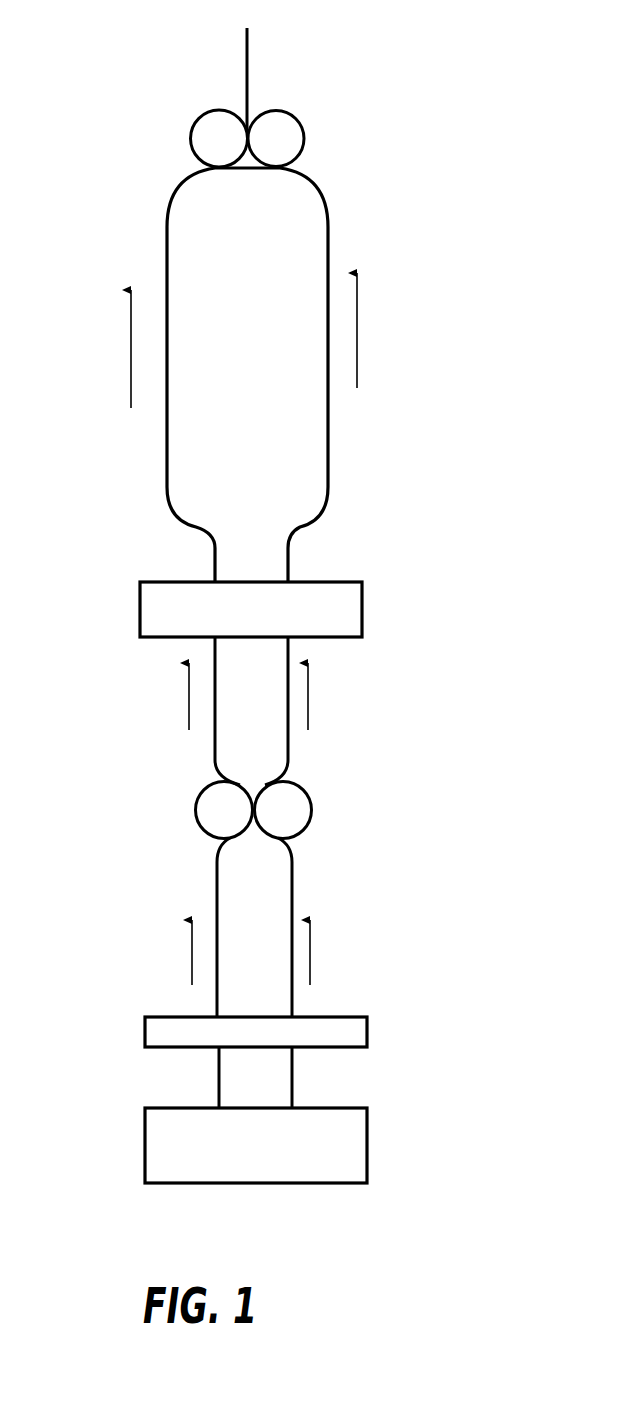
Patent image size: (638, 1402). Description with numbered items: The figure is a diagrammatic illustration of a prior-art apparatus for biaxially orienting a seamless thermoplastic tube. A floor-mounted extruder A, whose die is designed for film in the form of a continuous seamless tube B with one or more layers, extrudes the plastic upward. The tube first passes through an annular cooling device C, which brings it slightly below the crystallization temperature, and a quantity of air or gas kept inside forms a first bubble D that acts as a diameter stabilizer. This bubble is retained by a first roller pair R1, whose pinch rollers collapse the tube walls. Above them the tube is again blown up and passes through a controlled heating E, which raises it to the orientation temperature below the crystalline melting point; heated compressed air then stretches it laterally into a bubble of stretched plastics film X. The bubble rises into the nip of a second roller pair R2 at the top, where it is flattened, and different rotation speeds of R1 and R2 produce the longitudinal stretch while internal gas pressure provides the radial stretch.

The second roller pair R2 is at (293, 136).
The bubble of stretched plastics film X is at (330, 475).
The controlled heating E is at (362, 612).
The first roller pair R1 is at (297, 808).
The first bubble D is at (273, 887).
The cooling C is at (353, 1030).
The continuous seamless tube B is at (292, 1072).
The extruder A is at (263, 1167).